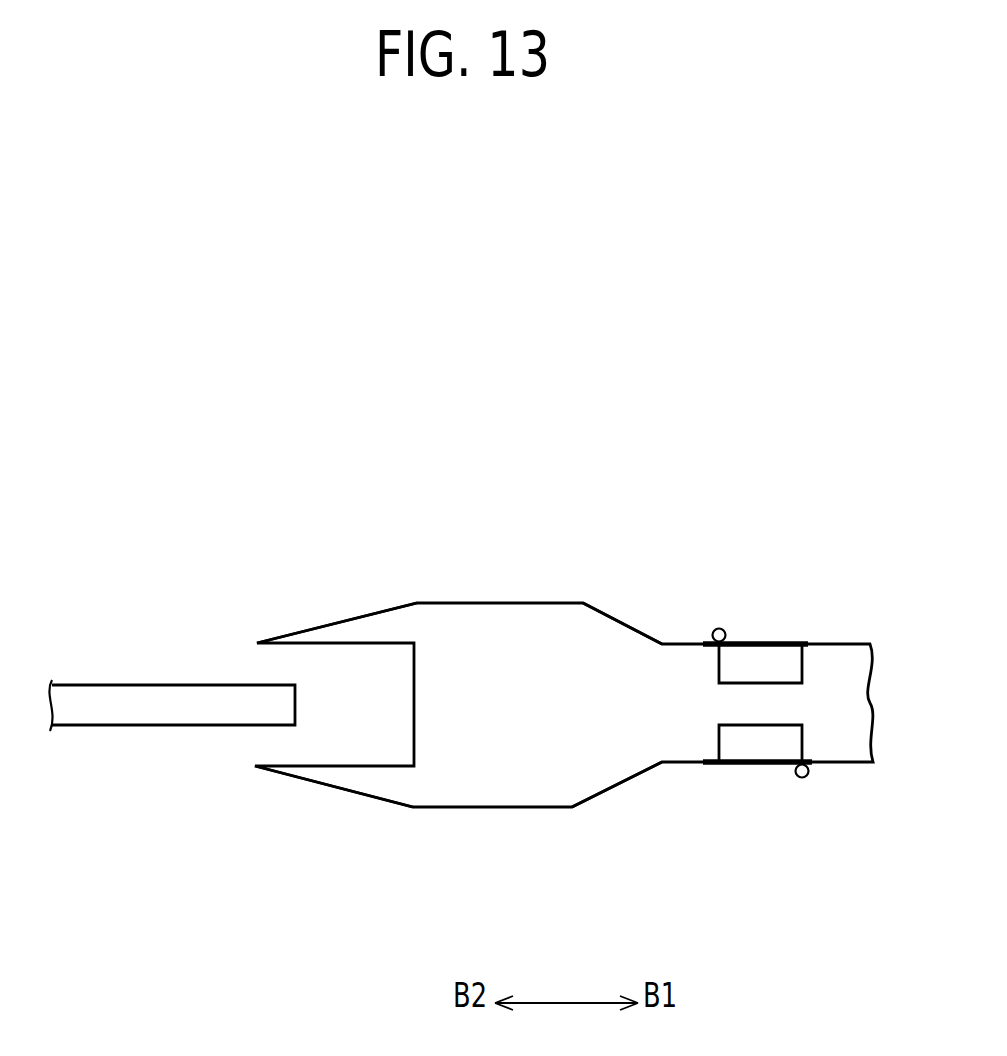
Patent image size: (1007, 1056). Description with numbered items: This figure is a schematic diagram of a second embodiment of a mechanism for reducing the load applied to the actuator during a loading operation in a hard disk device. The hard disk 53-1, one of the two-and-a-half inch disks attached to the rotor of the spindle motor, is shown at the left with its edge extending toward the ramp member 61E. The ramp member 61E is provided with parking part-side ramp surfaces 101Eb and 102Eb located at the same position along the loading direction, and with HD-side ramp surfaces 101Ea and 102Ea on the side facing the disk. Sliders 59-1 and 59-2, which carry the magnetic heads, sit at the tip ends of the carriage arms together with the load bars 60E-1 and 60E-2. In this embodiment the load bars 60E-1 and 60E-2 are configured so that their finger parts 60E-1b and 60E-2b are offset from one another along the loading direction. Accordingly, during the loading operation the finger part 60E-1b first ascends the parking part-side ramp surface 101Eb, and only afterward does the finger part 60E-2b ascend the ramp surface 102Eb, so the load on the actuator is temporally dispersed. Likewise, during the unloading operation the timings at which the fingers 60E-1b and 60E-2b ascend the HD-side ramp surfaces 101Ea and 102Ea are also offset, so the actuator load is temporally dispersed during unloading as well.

The hard disk 53-1 is at (133, 683).
The ramp member 61E is at (400, 602).
The HD-side ramp surface 101Ea is at (337, 617).
The parking part-side ramp surface 101Eb is at (609, 616).
The HD-side ramp surface 102Ea is at (345, 795).
The parking part-side ramp surface 102Eb is at (600, 793).
The slider 59-1 is at (730, 664).
The slider 59-2 is at (728, 733).
The load bar 60E-1 is at (760, 643).
The load bar 60E-2 is at (765, 766).
The finger part 60E-1b is at (718, 628).
The finger part 60E-2b is at (803, 778).